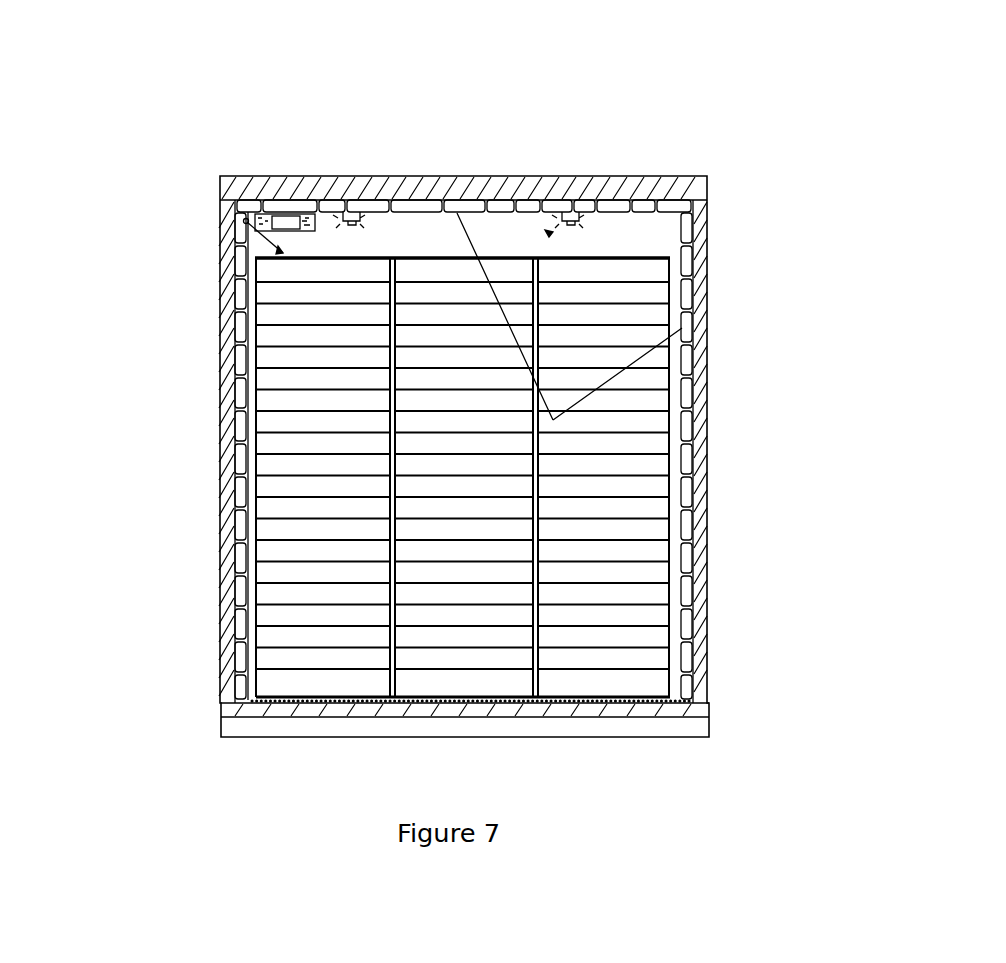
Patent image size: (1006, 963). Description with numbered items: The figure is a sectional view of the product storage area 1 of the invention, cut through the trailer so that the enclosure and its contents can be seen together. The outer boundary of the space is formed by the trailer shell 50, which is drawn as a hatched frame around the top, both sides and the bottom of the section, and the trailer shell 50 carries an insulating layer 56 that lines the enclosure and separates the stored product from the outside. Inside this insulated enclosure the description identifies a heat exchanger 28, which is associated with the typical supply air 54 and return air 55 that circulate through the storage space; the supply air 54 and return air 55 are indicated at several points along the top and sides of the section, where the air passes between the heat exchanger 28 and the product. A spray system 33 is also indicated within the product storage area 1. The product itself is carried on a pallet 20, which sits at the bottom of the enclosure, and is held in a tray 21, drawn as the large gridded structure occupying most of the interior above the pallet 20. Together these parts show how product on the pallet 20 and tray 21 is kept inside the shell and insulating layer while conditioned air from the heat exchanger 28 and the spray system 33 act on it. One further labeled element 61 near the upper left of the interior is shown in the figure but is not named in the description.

The product storage area 1 is at (888, 105).
The pallet 20 is at (318, 682).
The tray 21 is at (630, 657).
The heat exchanger 28 is at (238, 372).
The spray system 33 is at (553, 232).
The trailer shell 50 is at (716, 178).
The supply air 54 is at (280, 203).
The return air 55 is at (450, 200).
The insulating layer 56 is at (700, 238).
The mounting bracket 61 is at (280, 255).